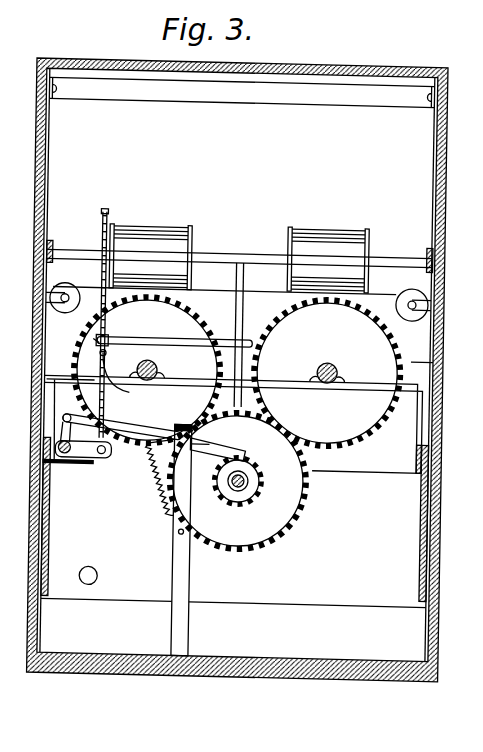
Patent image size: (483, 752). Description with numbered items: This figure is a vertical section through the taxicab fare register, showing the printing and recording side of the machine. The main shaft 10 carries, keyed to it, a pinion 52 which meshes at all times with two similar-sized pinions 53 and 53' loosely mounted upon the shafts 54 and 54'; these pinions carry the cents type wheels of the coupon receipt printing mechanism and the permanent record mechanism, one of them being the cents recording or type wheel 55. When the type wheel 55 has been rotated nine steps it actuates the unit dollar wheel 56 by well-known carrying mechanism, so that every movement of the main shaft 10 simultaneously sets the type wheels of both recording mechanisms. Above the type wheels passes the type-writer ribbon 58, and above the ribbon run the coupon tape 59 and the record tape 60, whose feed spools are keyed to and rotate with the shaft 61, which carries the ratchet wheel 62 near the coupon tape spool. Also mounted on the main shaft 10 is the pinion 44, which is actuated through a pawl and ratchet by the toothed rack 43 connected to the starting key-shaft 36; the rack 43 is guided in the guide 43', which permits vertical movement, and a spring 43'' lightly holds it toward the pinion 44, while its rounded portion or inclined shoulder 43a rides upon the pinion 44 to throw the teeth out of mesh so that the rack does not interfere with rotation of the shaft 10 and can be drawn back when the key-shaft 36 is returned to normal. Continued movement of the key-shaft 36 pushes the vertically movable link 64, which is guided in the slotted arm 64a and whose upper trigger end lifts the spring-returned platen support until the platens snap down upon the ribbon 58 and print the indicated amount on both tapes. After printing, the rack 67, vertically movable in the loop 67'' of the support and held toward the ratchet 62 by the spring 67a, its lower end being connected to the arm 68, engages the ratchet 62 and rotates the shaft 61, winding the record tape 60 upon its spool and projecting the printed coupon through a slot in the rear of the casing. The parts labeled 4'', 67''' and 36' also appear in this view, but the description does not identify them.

The ratchet wheel 62 is at (109, 215).
The coupon tape 59 is at (163, 234).
The shaft 61 is at (227, 250).
The record tape 60 is at (325, 233).
The type-writer ribbon 58 is at (384, 288).
The cents recording or type wheel 55 is at (238, 310).
The unit dollar wheel 56 is at (224, 301).
The vertically movable link 64 is at (248, 298).
The slotted arm 64a is at (263, 340).
The loop 67'' is at (123, 332).
The bar end 4'' is at (53, 358).
The bar 67''' is at (47, 395).
The pinion 53 is at (147, 370).
The pinion 53' is at (327, 373).
The shaft 54 is at (159, 370).
The shaft 54' is at (344, 373).
The pinion 44 is at (238, 480).
The pinion 52 is at (263, 479).
The main shaft 10 is at (243, 486).
The guide 43' is at (202, 540).
The spring 43'' is at (151, 478).
The toothed rack 43 is at (221, 445).
The rounded portion or inclined shoulder 43a is at (212, 442).
The rack 67 is at (121, 426).
The starting key-shaft 36 is at (73, 465).
The arm 68 is at (107, 456).
The spring 67a is at (135, 389).
The bracket 36' is at (49, 420).